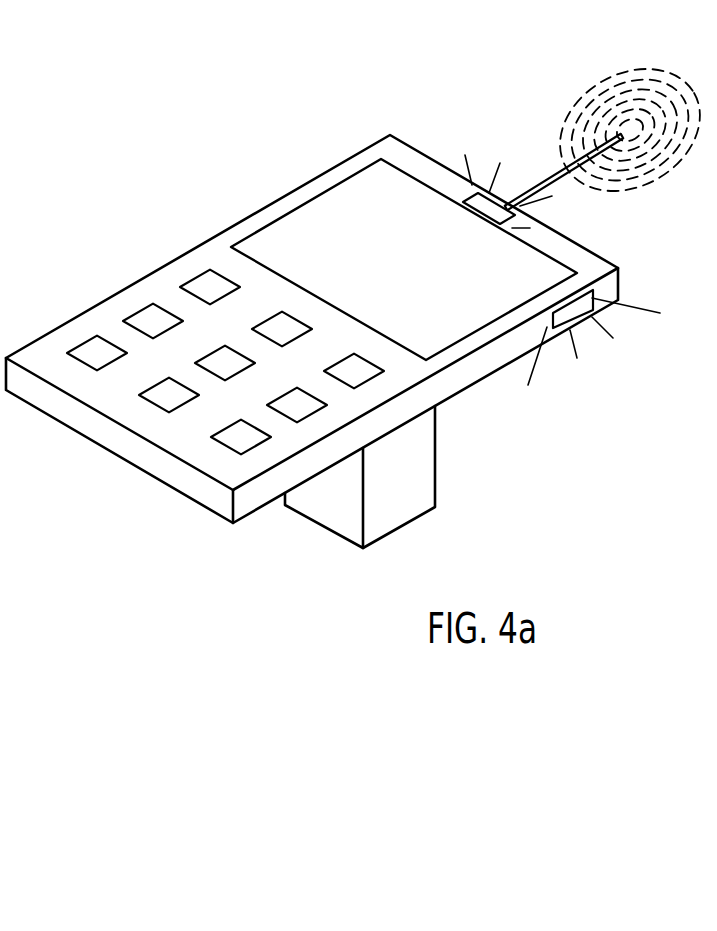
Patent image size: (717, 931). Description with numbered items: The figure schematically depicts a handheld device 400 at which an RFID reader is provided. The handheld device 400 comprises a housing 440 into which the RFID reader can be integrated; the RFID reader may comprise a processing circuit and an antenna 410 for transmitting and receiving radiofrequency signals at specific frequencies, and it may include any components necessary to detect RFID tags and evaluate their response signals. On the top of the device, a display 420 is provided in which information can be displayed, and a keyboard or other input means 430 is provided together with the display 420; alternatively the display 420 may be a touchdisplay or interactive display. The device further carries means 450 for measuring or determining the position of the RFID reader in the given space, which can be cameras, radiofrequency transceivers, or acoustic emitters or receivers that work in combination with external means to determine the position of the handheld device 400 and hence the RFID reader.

The handheld device 400 is at (634, 409).
The antenna 410 is at (538, 172).
The display 420 is at (272, 237).
The keyboard or other input means 430 is at (140, 313).
The housing 440 is at (270, 496).
The means for measuring or determining the position of the RFID reader 450 is at (518, 218).